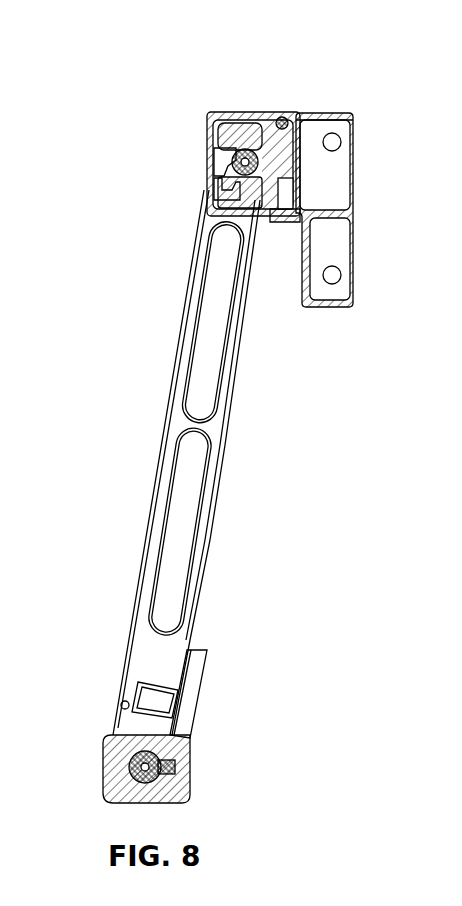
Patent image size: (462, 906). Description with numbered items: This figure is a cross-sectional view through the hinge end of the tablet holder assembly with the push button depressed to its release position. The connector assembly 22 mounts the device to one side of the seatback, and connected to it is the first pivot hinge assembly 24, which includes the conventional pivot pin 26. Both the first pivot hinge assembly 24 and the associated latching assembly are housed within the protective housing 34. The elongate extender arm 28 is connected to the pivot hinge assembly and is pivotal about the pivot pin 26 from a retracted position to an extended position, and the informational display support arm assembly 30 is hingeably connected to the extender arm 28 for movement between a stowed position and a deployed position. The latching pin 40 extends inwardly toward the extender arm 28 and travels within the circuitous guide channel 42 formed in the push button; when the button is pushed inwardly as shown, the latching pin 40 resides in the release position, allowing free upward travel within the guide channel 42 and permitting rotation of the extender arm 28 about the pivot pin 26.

The connector assembly 22 is at (355, 212).
The first pivot hinge assembly 24 is at (237, 106).
The pivot pin 26 is at (268, 118).
The elongate extender arm 28 is at (226, 444).
The informational display support arm assembly 30 is at (196, 775).
The protective housing 34 is at (308, 112).
The latching pin 40 is at (218, 180).
The circuitous guide channel 42 is at (225, 160).